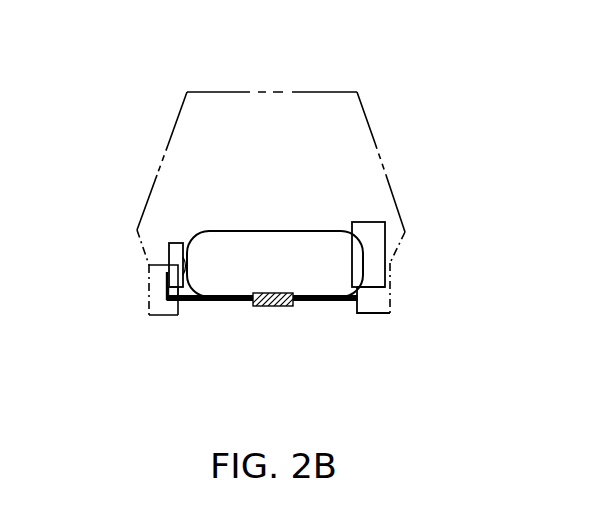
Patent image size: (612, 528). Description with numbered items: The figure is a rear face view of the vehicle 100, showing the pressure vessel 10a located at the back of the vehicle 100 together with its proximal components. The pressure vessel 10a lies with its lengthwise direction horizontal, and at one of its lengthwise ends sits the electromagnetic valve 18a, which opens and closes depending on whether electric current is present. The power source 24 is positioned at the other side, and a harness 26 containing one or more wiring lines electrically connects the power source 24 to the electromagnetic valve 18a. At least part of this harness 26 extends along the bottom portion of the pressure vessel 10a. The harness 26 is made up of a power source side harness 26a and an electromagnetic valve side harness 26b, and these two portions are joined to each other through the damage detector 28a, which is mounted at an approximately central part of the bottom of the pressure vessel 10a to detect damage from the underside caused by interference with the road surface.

The vehicle 100 is at (193, 70).
The electromagnetic valve 18a is at (174, 245).
The power source 24 is at (370, 222).
The pressure vessel 10a is at (350, 301).
The harness 26 is at (270, 363).
The electromagnetic valve side harness 26b is at (222, 301).
The power source side harness 26a is at (336, 342).
The damage detector 28a is at (278, 306).